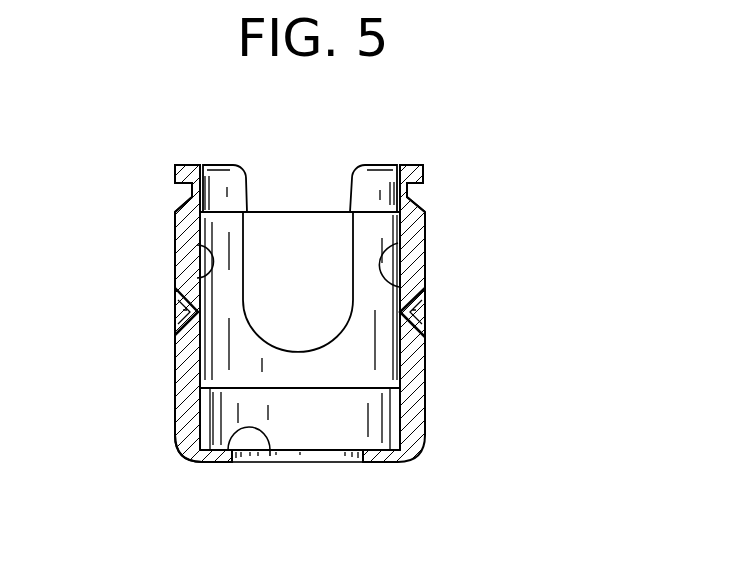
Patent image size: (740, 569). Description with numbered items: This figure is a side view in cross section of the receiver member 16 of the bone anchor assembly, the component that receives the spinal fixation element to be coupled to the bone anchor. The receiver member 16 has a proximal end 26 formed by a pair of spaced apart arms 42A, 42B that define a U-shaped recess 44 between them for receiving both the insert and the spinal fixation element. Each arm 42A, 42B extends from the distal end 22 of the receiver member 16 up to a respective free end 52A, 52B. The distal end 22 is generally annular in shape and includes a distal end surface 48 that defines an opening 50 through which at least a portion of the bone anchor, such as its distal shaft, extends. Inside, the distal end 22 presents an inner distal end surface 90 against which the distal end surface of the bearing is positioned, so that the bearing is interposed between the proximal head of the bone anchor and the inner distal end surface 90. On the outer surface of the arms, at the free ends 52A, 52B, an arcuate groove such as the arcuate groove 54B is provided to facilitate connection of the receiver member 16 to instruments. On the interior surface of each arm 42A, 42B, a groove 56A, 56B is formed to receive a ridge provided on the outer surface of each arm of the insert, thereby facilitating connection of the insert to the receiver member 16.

The receiver member 16 is at (482, 336).
The distal end 22 is at (172, 410).
The proximal end 26 is at (160, 231).
The arm 42A is at (427, 240).
The arm 42B is at (183, 262).
The U-shaped recess 44 is at (295, 188).
The distal end surface 48 is at (205, 463).
The opening 50 is at (307, 463).
The free end 52A is at (400, 170).
The free end 52B is at (177, 165).
The arcuate groove 54B is at (170, 190).
The groove 56A is at (400, 283).
The groove 56B is at (187, 285).
The inner distal end surface 90 is at (268, 456).